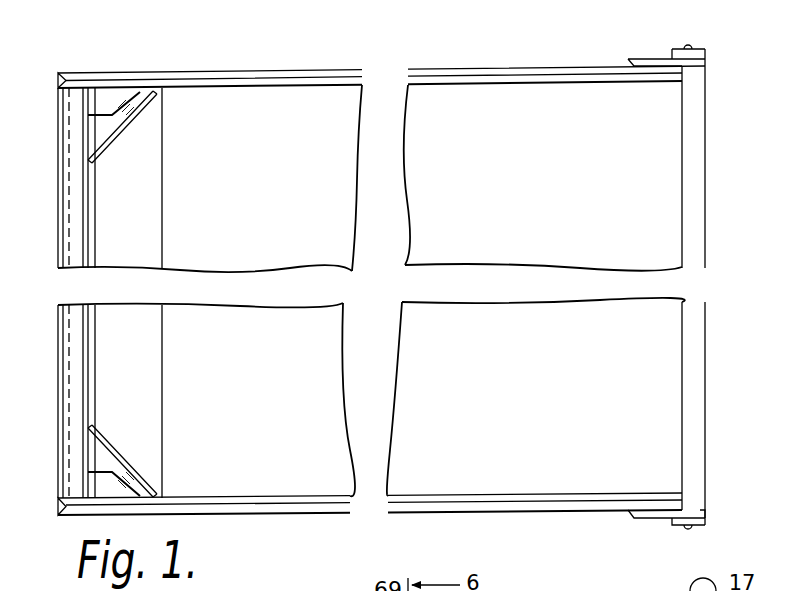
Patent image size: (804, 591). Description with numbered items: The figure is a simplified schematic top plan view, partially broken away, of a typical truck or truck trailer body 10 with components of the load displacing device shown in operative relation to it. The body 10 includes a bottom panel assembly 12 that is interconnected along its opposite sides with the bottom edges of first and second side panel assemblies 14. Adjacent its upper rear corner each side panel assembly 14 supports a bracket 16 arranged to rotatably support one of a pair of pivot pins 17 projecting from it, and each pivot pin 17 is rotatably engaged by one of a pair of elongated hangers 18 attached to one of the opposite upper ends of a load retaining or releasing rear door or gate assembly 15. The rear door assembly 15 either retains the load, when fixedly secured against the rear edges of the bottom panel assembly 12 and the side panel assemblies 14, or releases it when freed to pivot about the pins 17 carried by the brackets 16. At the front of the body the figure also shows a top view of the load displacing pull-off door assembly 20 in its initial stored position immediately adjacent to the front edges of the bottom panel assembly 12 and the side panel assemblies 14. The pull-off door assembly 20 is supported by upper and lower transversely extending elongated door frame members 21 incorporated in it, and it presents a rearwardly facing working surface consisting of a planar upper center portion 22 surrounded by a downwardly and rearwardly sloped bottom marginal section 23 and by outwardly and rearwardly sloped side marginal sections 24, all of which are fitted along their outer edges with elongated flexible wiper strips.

The truck or truck trailer body 10 is at (440, 68).
The bottom panel assembly 12 is at (423, 254).
The side panel assembly 14 is at (267, 69).
The rear door or gate assembly 15 is at (693, 315).
The bracket 16 is at (657, 518).
The pivot pin 17 is at (688, 531).
The hanger 18 is at (707, 519).
The pull-off door assembly 20 is at (84, 270).
The door frame member 21 is at (82, 468).
The planar upper center portion 22 is at (100, 380).
The bottom marginal section 23 is at (165, 251).
The side marginal section 24 is at (128, 137).